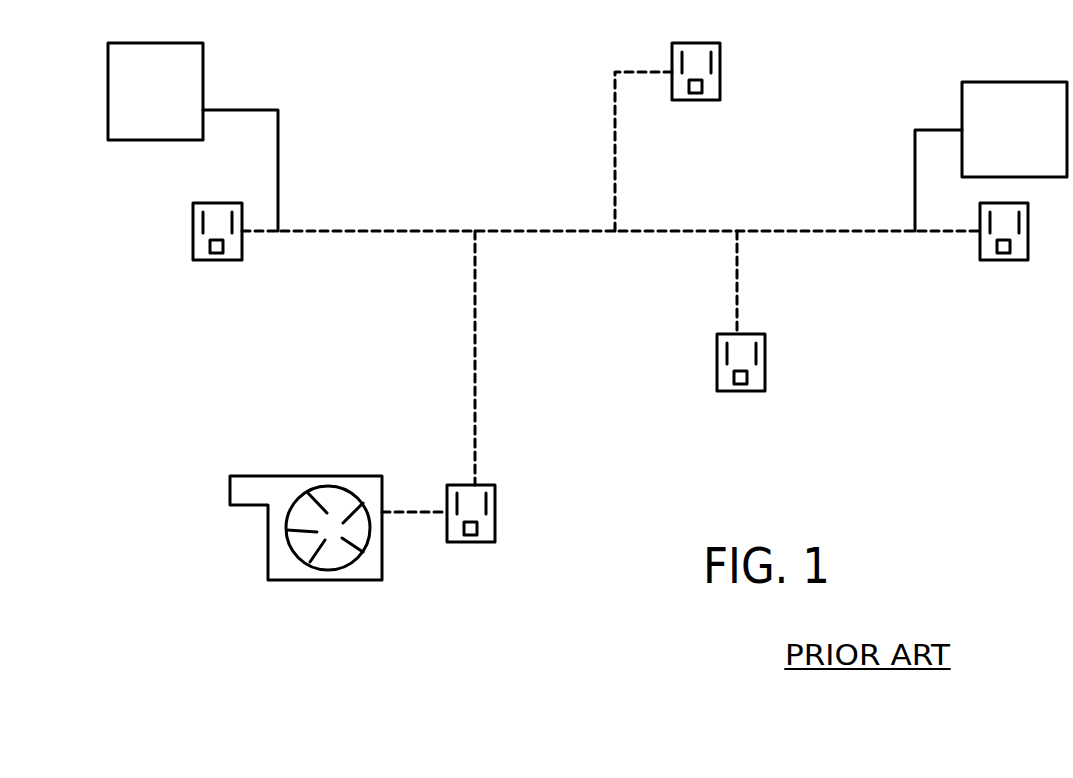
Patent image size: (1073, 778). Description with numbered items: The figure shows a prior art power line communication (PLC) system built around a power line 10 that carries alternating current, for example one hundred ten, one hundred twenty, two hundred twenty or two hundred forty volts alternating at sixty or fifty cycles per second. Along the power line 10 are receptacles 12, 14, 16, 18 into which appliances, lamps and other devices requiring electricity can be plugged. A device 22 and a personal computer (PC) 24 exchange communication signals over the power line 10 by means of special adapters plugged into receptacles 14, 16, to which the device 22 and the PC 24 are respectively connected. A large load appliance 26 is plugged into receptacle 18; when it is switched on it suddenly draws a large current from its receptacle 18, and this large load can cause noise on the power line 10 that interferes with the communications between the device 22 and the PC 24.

The power line 10 is at (530, 231).
The receptacle 12 is at (683, 100).
The receptacle 14 is at (208, 260).
The receptacle 16 is at (995, 260).
The receptacle 18 is at (460, 542).
The device 22 is at (178, 126).
The personal computer (PC) 24 is at (1041, 162).
The large load appliance 26 is at (337, 580).